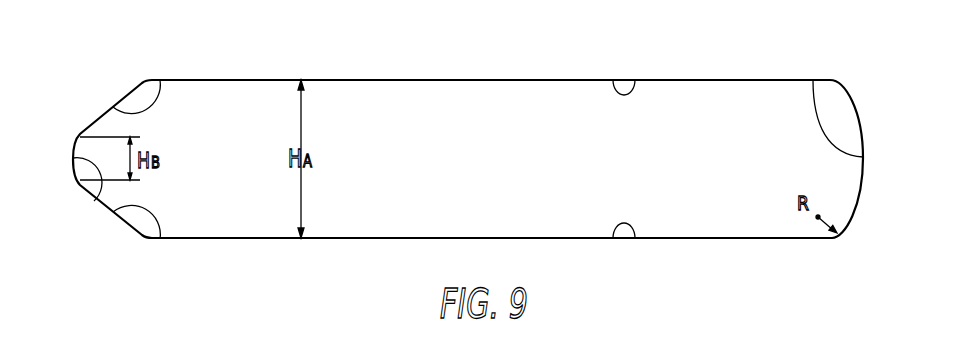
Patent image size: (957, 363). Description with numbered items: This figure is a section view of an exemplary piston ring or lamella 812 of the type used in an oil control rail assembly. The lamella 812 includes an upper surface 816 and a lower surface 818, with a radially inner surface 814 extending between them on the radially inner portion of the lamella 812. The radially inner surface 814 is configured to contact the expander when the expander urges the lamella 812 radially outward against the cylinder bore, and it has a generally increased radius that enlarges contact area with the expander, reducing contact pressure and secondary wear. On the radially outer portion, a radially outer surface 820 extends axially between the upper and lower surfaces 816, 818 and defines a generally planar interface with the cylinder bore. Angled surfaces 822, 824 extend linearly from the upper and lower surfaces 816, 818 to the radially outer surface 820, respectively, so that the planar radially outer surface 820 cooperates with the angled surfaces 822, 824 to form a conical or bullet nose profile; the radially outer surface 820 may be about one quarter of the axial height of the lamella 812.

The lamella 812 is at (467, 167).
The radially inner surface 814 is at (813, 80).
The upper surface 816 is at (635, 80).
The lower surface 818 is at (635, 238).
The radially outer surface 820 is at (95, 201).
The angled surface 822 is at (164, 81).
The angled surface 824 is at (177, 248).